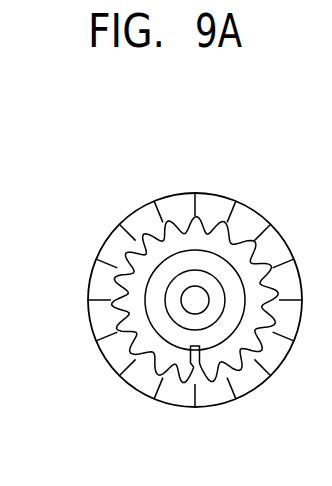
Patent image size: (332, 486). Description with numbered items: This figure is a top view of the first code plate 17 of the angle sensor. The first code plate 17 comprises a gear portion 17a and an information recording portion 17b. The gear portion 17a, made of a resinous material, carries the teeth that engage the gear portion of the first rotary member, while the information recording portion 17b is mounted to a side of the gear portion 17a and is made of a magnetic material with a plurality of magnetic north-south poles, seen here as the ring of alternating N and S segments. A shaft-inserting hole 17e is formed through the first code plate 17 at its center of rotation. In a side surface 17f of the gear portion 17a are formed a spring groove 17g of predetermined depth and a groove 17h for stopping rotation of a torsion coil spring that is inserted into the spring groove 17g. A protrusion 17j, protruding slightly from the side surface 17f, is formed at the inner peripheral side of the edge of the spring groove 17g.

The first code plate 17 is at (97, 168).
The gear portion 17a is at (223, 230).
The information recording portion 17b is at (163, 205).
The shaft-inserting hole 17e is at (198, 305).
The side surface 17f is at (248, 240).
The spring groove 17g is at (167, 333).
The groove 17h is at (194, 363).
The protrusion 17j is at (173, 283).